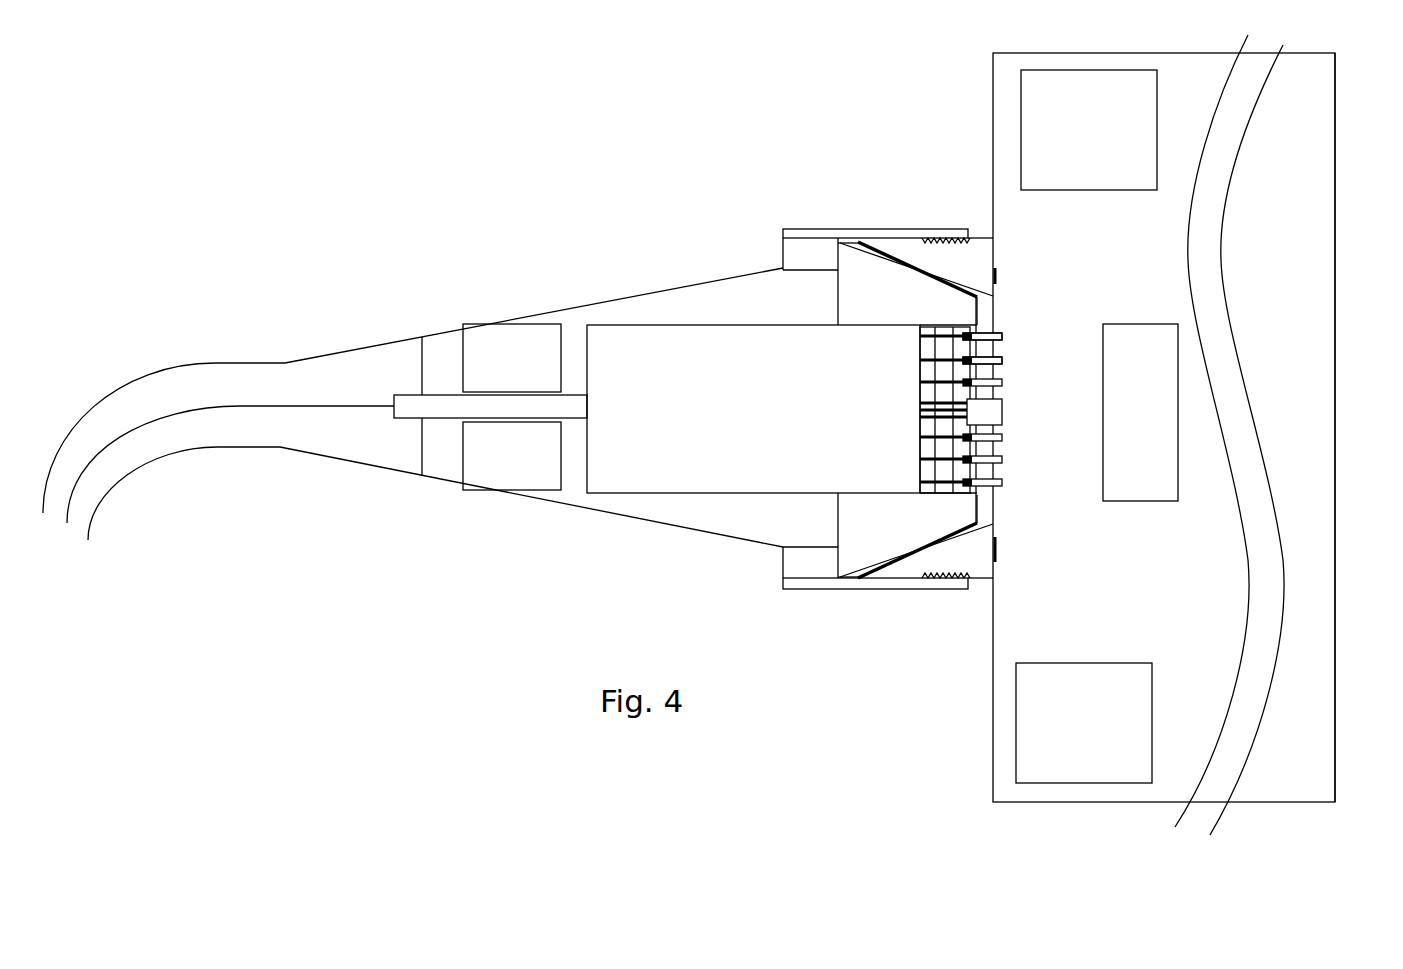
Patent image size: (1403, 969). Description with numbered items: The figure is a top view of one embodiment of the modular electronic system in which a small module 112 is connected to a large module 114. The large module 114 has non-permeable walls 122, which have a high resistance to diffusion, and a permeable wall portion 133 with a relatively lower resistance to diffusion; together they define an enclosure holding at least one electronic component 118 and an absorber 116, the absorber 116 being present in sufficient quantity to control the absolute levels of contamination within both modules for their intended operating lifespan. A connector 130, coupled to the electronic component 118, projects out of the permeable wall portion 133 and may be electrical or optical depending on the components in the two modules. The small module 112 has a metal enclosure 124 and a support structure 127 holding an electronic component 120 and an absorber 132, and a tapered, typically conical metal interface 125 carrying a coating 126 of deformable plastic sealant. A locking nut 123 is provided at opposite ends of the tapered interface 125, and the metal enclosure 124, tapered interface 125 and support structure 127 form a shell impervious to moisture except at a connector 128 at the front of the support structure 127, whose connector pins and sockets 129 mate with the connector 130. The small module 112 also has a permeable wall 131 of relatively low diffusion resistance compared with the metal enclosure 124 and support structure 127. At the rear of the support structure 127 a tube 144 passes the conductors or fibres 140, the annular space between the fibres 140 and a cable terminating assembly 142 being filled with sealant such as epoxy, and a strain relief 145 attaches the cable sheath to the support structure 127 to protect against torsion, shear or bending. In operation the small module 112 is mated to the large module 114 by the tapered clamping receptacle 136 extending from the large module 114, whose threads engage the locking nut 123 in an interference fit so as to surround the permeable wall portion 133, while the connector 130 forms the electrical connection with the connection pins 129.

The small module 112 is at (522, 150).
The large module 114 is at (1023, 815).
The absorber 116 is at (1070, 141).
The electronic component 118 is at (1122, 424).
The electronic component 120 is at (610, 470).
The non-permeable walls 122 is at (1336, 142).
The locking nut 123 is at (793, 228).
The metal enclosure 124 is at (662, 507).
The tapered interface 125 is at (846, 240).
The coating 126 is at (957, 280).
The support structure 127 is at (455, 482).
The connector 128 is at (940, 330).
The connector pins and sockets 129 is at (980, 353).
The connector 130 is at (1002, 437).
The permeable wall 131 is at (935, 375).
The absorber 132 is at (494, 350).
The permeable wall portion 133 is at (996, 350).
The tapered clamping receptacle 136 is at (956, 235).
The conductors or fibres 140 is at (244, 406).
The cable terminating assembly 142 is at (320, 447).
The tube 144 is at (398, 420).
The strain relief 145 is at (330, 373).